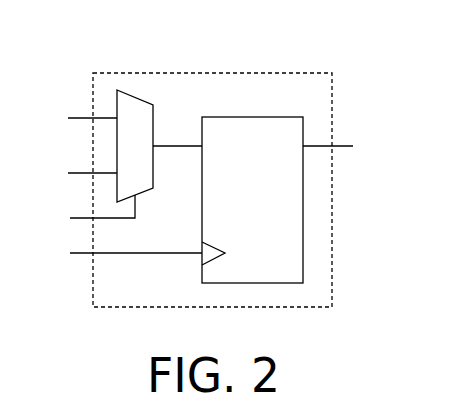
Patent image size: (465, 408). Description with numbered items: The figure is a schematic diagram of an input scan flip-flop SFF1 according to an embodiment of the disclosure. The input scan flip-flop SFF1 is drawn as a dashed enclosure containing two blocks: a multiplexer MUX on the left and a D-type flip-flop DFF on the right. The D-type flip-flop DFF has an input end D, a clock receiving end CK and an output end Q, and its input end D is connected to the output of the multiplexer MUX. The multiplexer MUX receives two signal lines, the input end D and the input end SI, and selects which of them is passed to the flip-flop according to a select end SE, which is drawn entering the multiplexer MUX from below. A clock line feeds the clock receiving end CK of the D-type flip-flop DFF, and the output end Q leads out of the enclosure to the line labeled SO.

The input scan flip-flop SFF1 is at (267, 73).
The multiplexer MUX is at (138, 98).
The D-type flip-flop DFF is at (233, 283).
The input end D is at (81, 120).
The input end SI is at (79, 174).
The select end SE is at (84, 214).
The clock receiving end CK is at (117, 255).
The scan output SO is at (347, 147).